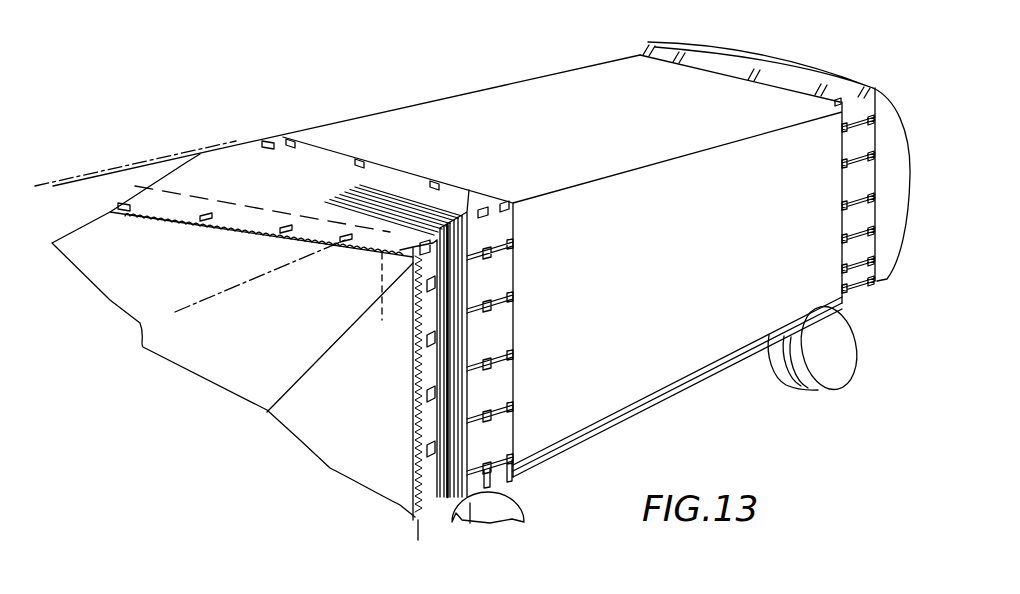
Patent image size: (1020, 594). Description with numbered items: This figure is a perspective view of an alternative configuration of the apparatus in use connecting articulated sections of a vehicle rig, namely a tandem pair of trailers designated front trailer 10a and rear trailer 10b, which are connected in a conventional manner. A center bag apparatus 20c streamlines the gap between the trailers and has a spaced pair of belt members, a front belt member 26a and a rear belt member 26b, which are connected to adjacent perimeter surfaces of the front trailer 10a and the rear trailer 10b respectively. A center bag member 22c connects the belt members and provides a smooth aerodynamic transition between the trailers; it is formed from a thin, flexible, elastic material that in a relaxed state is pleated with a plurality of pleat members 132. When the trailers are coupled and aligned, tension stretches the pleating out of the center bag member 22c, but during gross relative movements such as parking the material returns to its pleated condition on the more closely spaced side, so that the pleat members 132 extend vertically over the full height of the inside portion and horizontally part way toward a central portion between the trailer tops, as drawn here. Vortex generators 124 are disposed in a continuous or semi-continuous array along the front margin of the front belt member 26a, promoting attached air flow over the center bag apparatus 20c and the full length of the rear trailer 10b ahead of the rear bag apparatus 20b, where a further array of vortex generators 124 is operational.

The front trailer 10a is at (355, 443).
The rear trailer 10b is at (692, 297).
The rear bag apparatus 20b is at (657, 50).
The center bag apparatus 20c is at (195, 161).
The center bag member 22c is at (252, 188).
The front belt member 26a is at (122, 205).
The rear belt member 26b is at (265, 140).
The vortex generators 124 is at (224, 229).
The pleat members 132 is at (396, 222).